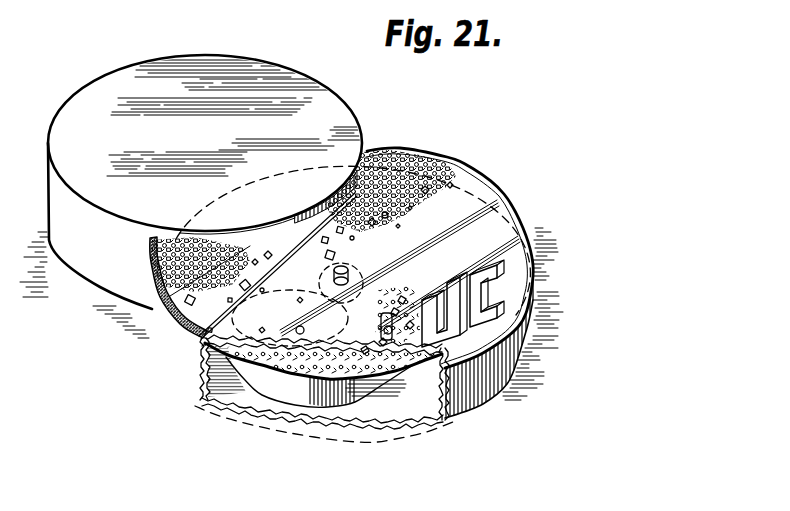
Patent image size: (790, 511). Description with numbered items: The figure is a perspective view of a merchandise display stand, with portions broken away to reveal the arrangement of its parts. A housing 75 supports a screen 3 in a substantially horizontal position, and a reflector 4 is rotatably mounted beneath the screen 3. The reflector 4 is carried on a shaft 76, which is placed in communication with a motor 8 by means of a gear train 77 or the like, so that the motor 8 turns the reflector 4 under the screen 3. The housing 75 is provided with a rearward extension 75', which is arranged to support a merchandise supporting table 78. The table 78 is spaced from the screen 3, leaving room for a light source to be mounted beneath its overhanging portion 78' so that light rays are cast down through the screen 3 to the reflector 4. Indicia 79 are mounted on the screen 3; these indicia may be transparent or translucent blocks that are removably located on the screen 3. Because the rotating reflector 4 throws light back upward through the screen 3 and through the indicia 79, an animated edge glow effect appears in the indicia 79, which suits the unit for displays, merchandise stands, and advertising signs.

The merchandise supporting table 78 is at (205, 144).
The overhanging portion 78' is at (353, 240).
The housing 75 is at (356, 295).
The rearward extension 75' is at (86, 240).
The gear train 77 is at (314, 278).
The shaft 76 is at (336, 268).
The indicia 79 is at (452, 282).
The screen 3 is at (490, 203).
The motor 8 is at (271, 392).
The reflector 4 is at (404, 378).